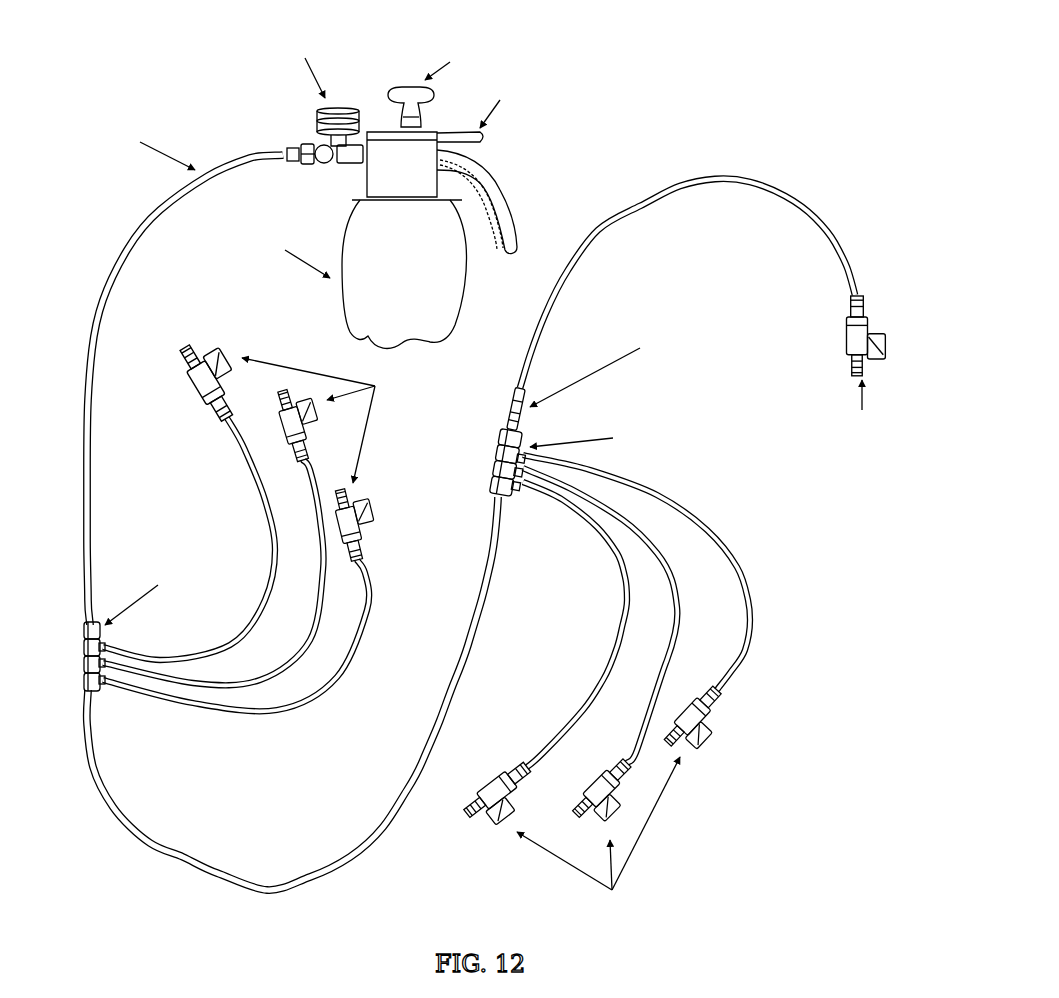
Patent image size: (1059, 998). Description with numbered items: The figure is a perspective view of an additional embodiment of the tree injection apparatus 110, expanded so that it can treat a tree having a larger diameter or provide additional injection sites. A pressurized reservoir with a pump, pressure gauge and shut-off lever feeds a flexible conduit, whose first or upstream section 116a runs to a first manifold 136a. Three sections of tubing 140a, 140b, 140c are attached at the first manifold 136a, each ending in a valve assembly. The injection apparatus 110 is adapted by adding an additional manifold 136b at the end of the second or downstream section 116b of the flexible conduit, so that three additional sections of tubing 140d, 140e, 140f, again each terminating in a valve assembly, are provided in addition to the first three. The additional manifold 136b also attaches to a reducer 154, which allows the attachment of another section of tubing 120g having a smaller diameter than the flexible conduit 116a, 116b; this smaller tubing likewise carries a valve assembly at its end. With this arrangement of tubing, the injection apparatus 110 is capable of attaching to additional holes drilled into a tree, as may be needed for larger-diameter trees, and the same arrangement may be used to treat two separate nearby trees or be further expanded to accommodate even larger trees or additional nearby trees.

The injection apparatus 110 is at (683, 117).
The first or upstream section of the flexible conduit 116a is at (93, 378).
The second or downstream section of the flexible conduit 116b is at (406, 790).
The section of tubing 120g is at (730, 183).
The first manifold 136a is at (84, 655).
The additional manifold 136b is at (494, 458).
The section of tubing 140a is at (258, 495).
The section of tubing 140b is at (322, 533).
The section of tubing 140c is at (363, 610).
The additional section of tubing 140d is at (617, 640).
The additional section of tubing 140e is at (673, 617).
The additional section of tubing 140f is at (747, 588).
The reducer 154 is at (524, 398).